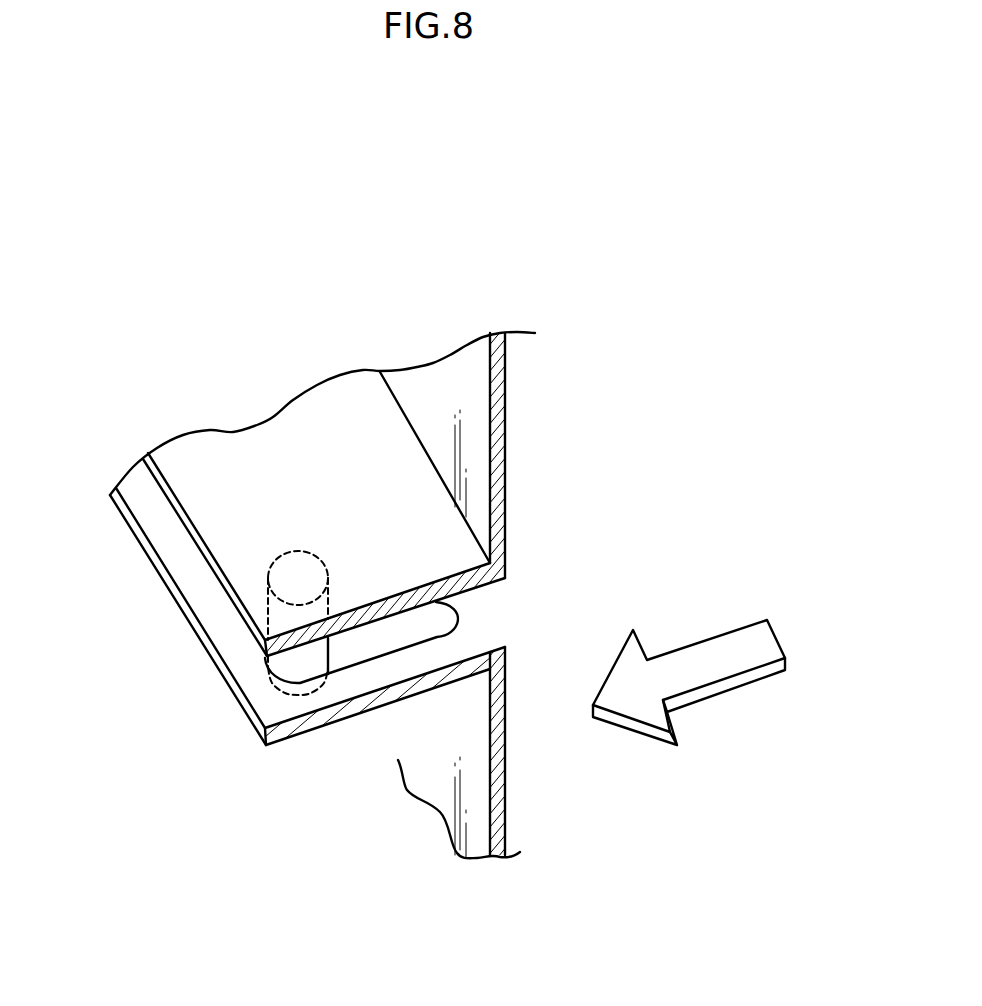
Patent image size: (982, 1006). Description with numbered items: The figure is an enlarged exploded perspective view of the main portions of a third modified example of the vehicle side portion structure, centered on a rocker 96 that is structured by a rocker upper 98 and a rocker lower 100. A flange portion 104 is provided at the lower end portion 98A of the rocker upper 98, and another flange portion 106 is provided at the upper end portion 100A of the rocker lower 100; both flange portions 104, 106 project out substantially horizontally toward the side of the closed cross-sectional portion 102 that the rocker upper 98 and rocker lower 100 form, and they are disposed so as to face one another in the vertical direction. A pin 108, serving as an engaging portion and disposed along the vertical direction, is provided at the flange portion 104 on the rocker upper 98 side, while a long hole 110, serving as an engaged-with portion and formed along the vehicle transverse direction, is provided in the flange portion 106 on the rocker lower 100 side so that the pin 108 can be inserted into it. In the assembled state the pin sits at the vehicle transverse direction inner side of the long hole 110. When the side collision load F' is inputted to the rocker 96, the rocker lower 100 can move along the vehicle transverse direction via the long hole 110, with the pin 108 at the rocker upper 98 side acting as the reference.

The rocker 96 is at (619, 358).
The rocker upper 98 is at (518, 413).
The lower end portion of the rocker upper 98A is at (497, 540).
The rocker lower 100 is at (526, 767).
The upper end portion of the rocker lower 100A is at (497, 652).
The closed cross-sectional portion 102 is at (225, 843).
The flange portion 104 is at (213, 498).
The flange portion 106 is at (212, 603).
The pin 108 is at (288, 665).
The long hole 110 is at (367, 648).
The side collision load F' is at (689, 682).